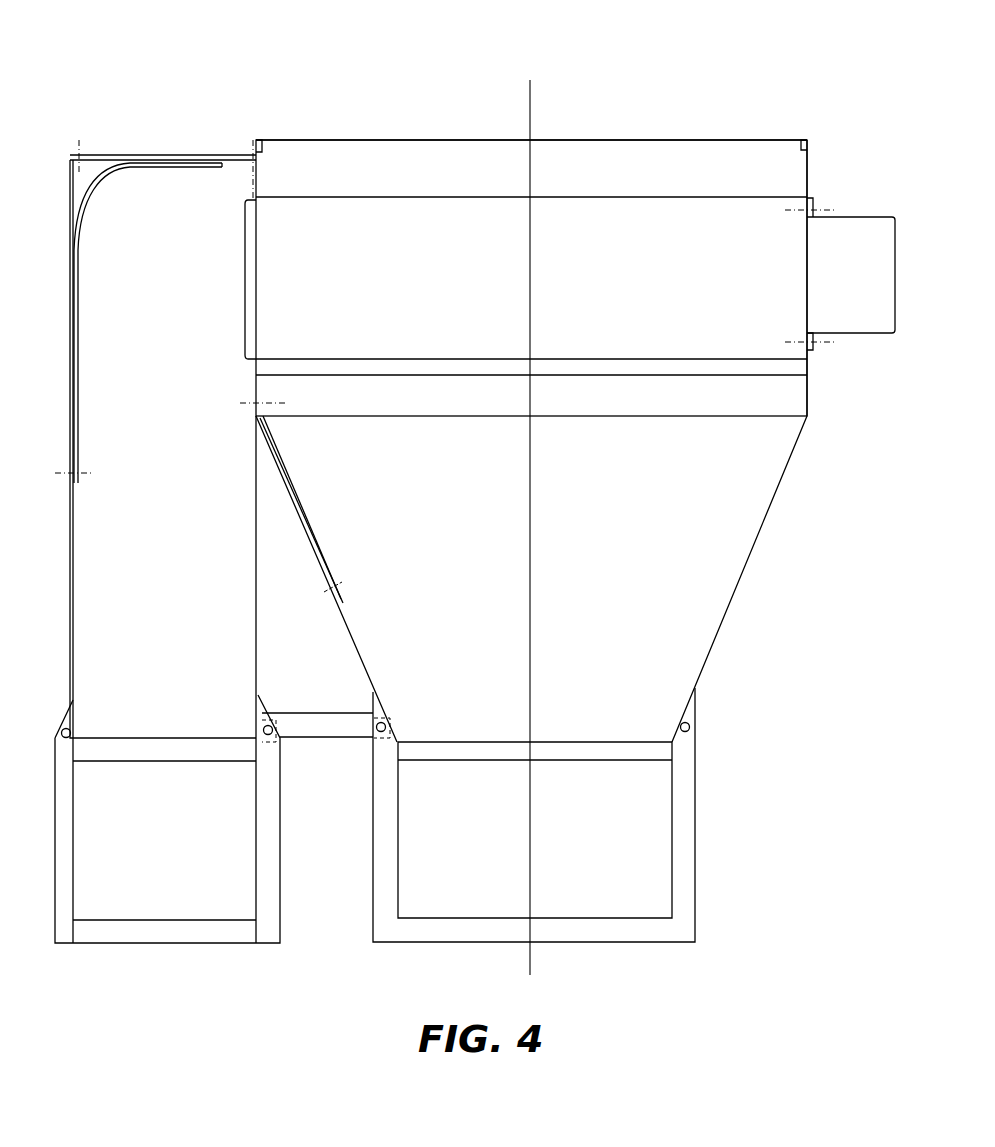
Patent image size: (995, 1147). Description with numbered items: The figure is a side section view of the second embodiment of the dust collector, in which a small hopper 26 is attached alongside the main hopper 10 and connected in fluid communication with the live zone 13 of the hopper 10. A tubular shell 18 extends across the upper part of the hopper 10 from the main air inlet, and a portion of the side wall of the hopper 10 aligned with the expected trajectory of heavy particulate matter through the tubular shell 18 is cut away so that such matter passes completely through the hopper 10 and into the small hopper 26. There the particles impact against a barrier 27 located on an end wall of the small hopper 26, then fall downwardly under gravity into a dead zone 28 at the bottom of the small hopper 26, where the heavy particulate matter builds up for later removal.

The main hopper 10 is at (722, 101).
The live zone 13 is at (692, 601).
The tubular shell 18 is at (599, 345).
The small hopper 26 is at (117, 524).
The barrier 27 is at (77, 318).
The dead zone 28 is at (126, 660).